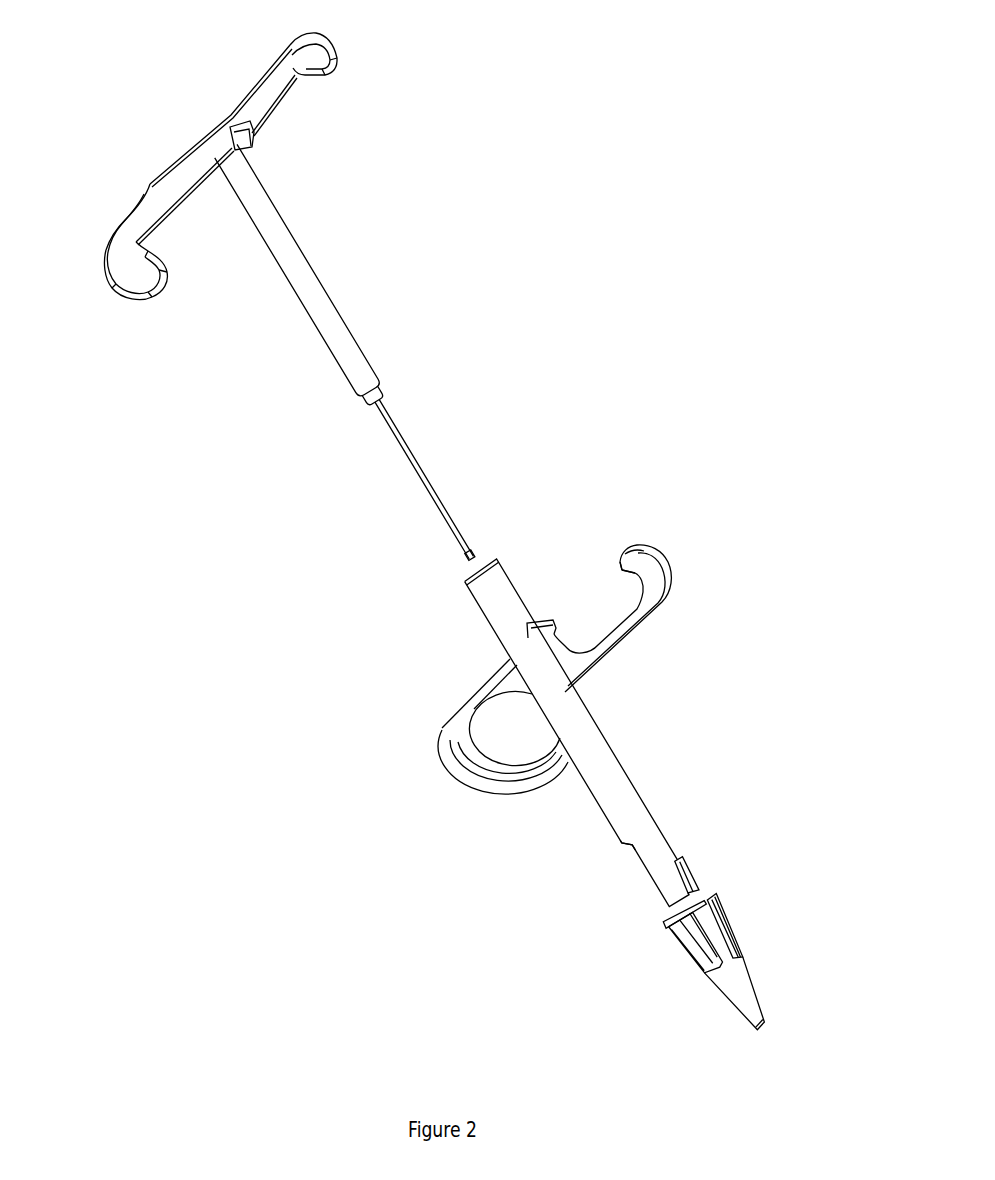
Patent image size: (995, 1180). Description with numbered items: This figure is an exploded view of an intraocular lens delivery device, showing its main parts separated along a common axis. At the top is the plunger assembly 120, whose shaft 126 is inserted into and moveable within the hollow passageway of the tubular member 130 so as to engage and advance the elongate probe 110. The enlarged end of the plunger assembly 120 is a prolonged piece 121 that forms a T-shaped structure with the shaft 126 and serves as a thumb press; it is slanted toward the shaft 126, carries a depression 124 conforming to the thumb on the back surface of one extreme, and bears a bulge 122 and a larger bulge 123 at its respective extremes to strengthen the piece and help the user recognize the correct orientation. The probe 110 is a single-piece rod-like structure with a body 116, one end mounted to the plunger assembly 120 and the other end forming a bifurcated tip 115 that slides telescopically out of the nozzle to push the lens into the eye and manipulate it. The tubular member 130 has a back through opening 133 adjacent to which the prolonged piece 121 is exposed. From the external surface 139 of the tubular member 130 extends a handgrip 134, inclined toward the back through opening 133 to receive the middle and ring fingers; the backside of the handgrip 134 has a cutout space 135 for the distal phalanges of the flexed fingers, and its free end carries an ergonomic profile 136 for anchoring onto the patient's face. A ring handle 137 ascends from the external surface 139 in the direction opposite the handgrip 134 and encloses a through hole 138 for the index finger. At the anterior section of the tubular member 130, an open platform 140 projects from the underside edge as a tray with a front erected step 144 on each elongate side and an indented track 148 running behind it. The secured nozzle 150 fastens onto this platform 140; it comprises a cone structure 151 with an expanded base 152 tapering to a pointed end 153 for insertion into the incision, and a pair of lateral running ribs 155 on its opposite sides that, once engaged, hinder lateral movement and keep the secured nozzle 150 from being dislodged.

The elongate probe 110 is at (420, 352).
The bifurcated tip 115 is at (474, 560).
The body 116 is at (433, 480).
The plunger assembly 120 is at (264, 193).
The prolonged piece 121 is at (207, 130).
The bulge 122 is at (318, 50).
The bulge 123 is at (132, 286).
The depression 124 is at (137, 208).
The shaft 126 is at (360, 375).
The tubular member 130 is at (477, 665).
The back through opening 133 is at (462, 580).
The handgrip 134 is at (615, 640).
The cutout space 135 is at (598, 606).
The ergonomic profile 136 is at (633, 567).
The ring handle 137 is at (442, 731).
The through hole 138 is at (518, 740).
The external surface 139 is at (593, 740).
The open platform 140 is at (680, 835).
The front erected step 144 is at (695, 882).
The indented track 148 is at (642, 852).
The secured nozzle 150 is at (602, 950).
The cone structure 151 is at (722, 957).
The expanded base 152 is at (715, 900).
The pointed end 153 is at (750, 1020).
The lateral running rib 155 is at (742, 942).